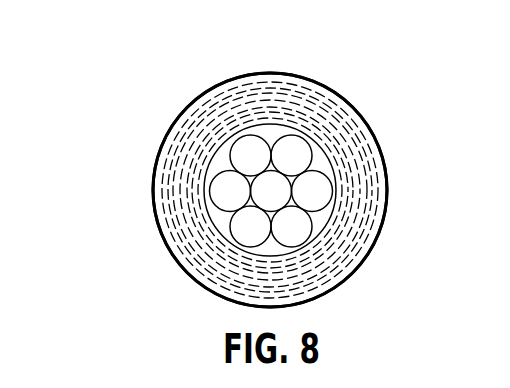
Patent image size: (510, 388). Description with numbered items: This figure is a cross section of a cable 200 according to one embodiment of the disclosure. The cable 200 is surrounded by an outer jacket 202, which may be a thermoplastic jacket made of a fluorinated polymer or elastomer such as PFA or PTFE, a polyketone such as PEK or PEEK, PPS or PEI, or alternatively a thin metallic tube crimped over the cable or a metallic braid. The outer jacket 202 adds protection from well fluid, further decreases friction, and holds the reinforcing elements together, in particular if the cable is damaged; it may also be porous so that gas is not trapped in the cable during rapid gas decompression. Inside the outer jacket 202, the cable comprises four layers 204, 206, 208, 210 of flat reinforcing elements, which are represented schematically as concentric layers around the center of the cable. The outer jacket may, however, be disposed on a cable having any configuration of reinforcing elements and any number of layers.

The cable 200 is at (137, 168).
The outer jacket 202 is at (292, 76).
The layer of flat reinforcing elements 204 is at (303, 120).
The layer of flat reinforcing elements 206 is at (338, 132).
The layer of flat reinforcing elements 208 is at (368, 188).
The layer of flat reinforcing elements 210 is at (372, 227).